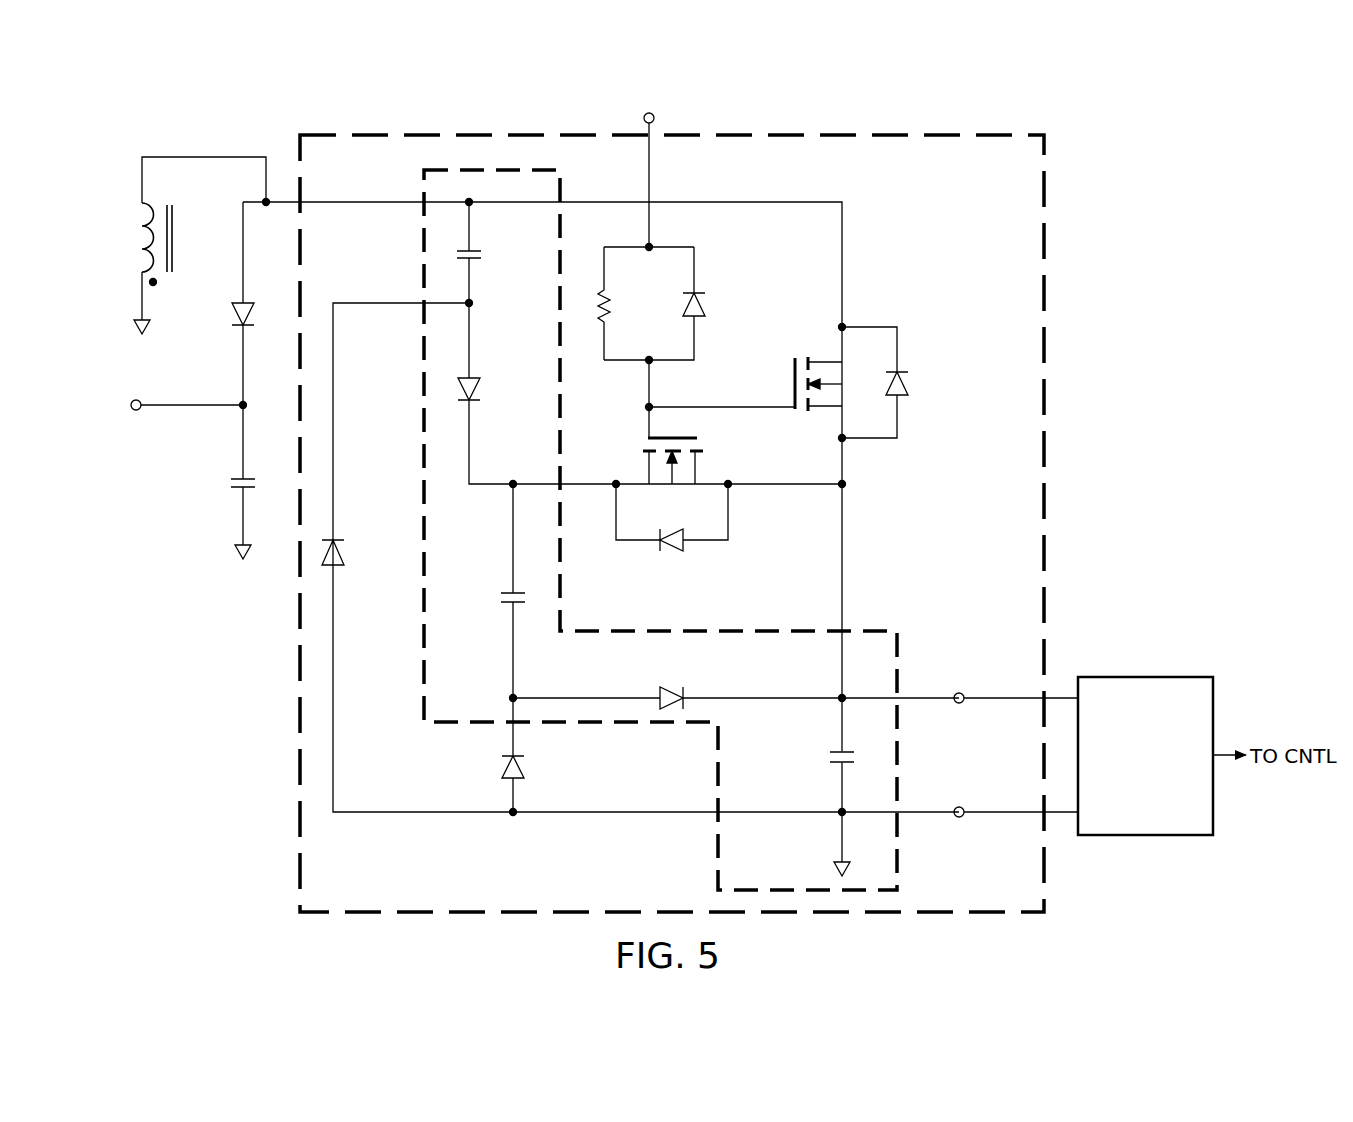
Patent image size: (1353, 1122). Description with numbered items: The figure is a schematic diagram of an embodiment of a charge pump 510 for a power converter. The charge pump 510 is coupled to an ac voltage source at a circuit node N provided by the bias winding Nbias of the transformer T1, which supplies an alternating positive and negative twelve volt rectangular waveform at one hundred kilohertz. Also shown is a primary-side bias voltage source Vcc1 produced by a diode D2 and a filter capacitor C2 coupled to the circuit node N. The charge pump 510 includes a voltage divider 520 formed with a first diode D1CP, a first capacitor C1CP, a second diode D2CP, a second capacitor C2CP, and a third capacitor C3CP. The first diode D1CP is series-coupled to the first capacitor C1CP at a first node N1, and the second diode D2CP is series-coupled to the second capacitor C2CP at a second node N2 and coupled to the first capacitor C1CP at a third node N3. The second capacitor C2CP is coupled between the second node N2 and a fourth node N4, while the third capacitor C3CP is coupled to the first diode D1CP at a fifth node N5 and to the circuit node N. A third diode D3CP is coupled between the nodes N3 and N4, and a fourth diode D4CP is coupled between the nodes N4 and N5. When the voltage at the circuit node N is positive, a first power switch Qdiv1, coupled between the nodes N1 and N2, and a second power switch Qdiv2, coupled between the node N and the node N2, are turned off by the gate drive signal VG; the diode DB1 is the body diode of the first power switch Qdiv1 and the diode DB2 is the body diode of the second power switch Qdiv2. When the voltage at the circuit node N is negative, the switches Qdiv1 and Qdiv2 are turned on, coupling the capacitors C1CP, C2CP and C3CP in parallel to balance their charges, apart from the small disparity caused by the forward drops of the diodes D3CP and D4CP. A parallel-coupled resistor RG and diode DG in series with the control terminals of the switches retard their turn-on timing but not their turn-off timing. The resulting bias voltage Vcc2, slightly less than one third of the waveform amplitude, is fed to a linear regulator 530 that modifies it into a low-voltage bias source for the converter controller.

The charge pump 510 is at (1044, 255).
The voltage divider 520 is at (898, 667).
The linear regulator 530 is at (1168, 791).
The transformer T1 is at (200, 245).
The bias winding Nbias is at (109, 241).
The circuit node N is at (264, 221).
The diode D2 is at (226, 303).
The primary-side bias voltage source Vcc1 is at (179, 420).
The filter capacitor C2 is at (225, 482).
The third capacitor C3CP is at (495, 251).
The fifth node N5 is at (418, 419).
The first diode D1CP is at (650, 393).
The first node N1 is at (674, 469).
The fourth diode D4CP is at (640, 676).
The first capacitor C1CP is at (483, 591).
The third node N3 is at (495, 697).
The third diode D3CP is at (482, 757).
The second diode D2CP is at (736, 681).
The second node N2 is at (824, 684).
The second capacitor C2CP is at (812, 766).
The fourth node N4 is at (855, 843).
The bias voltage Vcc2 is at (1015, 755).
The gate drive signal VG is at (664, 172).
The resistor RG is at (646, 303).
The diode DG is at (673, 305).
The second charge pump power switch Qdiv2 is at (746, 383).
The first charge pump power switch Qdiv1 is at (703, 460).
The body diode DB1 is at (672, 540).
The body diode DB2 is at (897, 382).